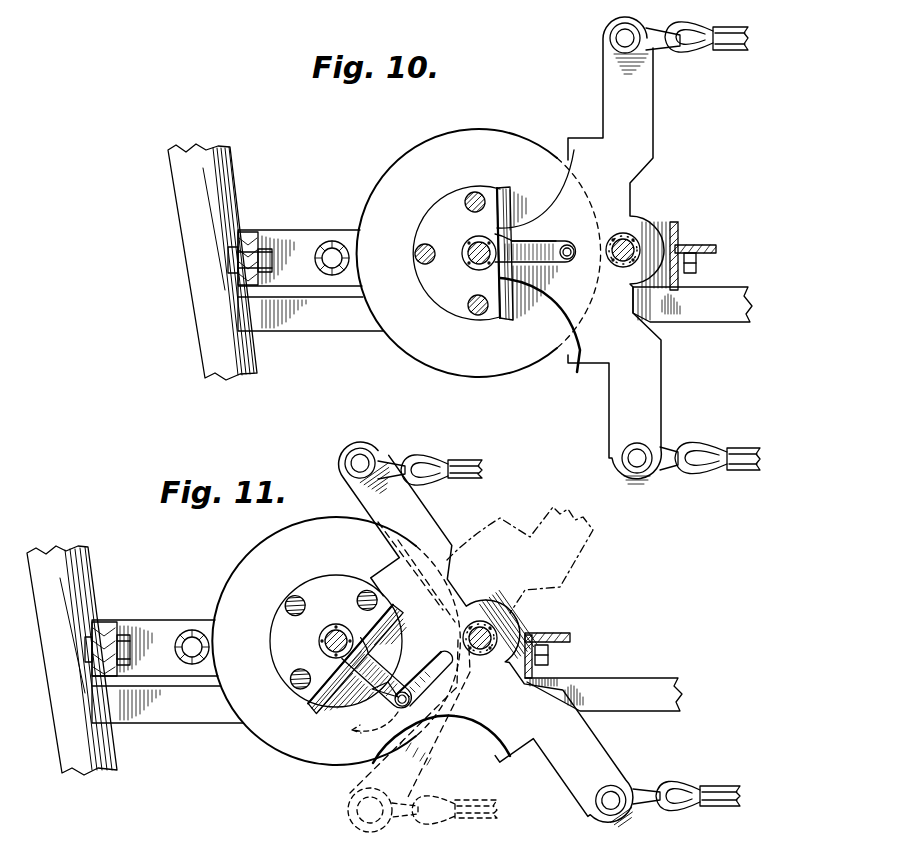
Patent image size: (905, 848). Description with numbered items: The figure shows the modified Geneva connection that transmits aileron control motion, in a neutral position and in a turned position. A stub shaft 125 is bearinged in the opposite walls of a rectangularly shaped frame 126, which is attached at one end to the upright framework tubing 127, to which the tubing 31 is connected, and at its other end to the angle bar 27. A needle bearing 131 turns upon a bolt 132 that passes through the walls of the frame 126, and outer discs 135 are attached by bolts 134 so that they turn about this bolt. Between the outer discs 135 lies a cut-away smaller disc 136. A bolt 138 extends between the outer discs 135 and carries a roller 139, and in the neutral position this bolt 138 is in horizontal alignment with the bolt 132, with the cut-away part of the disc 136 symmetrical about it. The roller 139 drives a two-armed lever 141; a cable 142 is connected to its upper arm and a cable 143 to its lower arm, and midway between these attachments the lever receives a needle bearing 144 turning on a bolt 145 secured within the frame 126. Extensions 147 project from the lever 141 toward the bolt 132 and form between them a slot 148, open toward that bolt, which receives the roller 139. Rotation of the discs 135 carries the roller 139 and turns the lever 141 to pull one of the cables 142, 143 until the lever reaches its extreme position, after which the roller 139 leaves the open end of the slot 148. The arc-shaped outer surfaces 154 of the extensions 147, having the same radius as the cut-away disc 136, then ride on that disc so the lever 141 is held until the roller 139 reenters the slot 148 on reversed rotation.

In FIG. 10, the angle bar 27 is at (702, 246).
In FIG. 11, the angle bar 27 is at (560, 642).
In FIG. 10, the tubing 31 is at (725, 312).
In FIG. 11, the tubing 31 is at (643, 679).
In FIG. 10, the stub shaft 125 is at (330, 240).
In FIG. 11, the stub shaft 125 is at (193, 630).
In FIG. 10, the rectangularly shaped frame 126 is at (284, 240).
In FIG. 11, the rectangularly shaped frame 126 is at (158, 606).
In FIG. 10, the framework tubing 127 is at (207, 344).
In FIG. 11, the framework tubing 127 is at (112, 750).
In FIG. 10, the needle bearing 131 is at (472, 272).
In FIG. 11, the needle bearing 131 is at (312, 650).
In FIG. 10, the bolt 132 is at (470, 240).
In FIG. 11, the bolt 132 is at (320, 641).
In FIG. 10, the bolts 134 is at (478, 194).
In FIG. 11, the bolts 134 is at (289, 604).
In FIG. 10, the outer discs 135 is at (460, 132).
In FIG. 11, the outer discs 135 is at (236, 574).
In FIG. 10, the cut-away smaller disc 136 is at (436, 204).
In FIG. 11, the cut-away smaller disc 136 is at (322, 566).
In FIG. 10, the bolt 138 is at (570, 244).
In FIG. 11, the bolt 138 is at (394, 700).
In FIG. 10, the roller 139 is at (550, 241).
In FIG. 11, the roller 139 is at (392, 699).
In FIG. 10, the two-armed lever 141 is at (618, 202).
In FIG. 11, the two-armed lever 141 is at (558, 748).
In FIG. 10, the cable 142 is at (703, 48).
In FIG. 11, the cable 142 is at (440, 462).
In FIG. 10, the cable 143 is at (720, 444).
In FIG. 11, the cable 143 is at (700, 810).
In FIG. 10, the needle bearing 144 is at (624, 268).
In FIG. 11, the needle bearing 144 is at (462, 630).
In FIG. 10, the bolt 145 is at (624, 233).
In FIG. 11, the bolt 145 is at (470, 665).
In FIG. 10, the extensions 147 is at (553, 216).
In FIG. 11, the extensions 147 is at (410, 663).
In FIG. 10, the slot 148 is at (560, 262).
In FIG. 11, the slot 148 is at (447, 665).
In FIG. 10, the outer surfaces 154 is at (560, 184).
In FIG. 11, the outer surfaces 154 is at (390, 622).